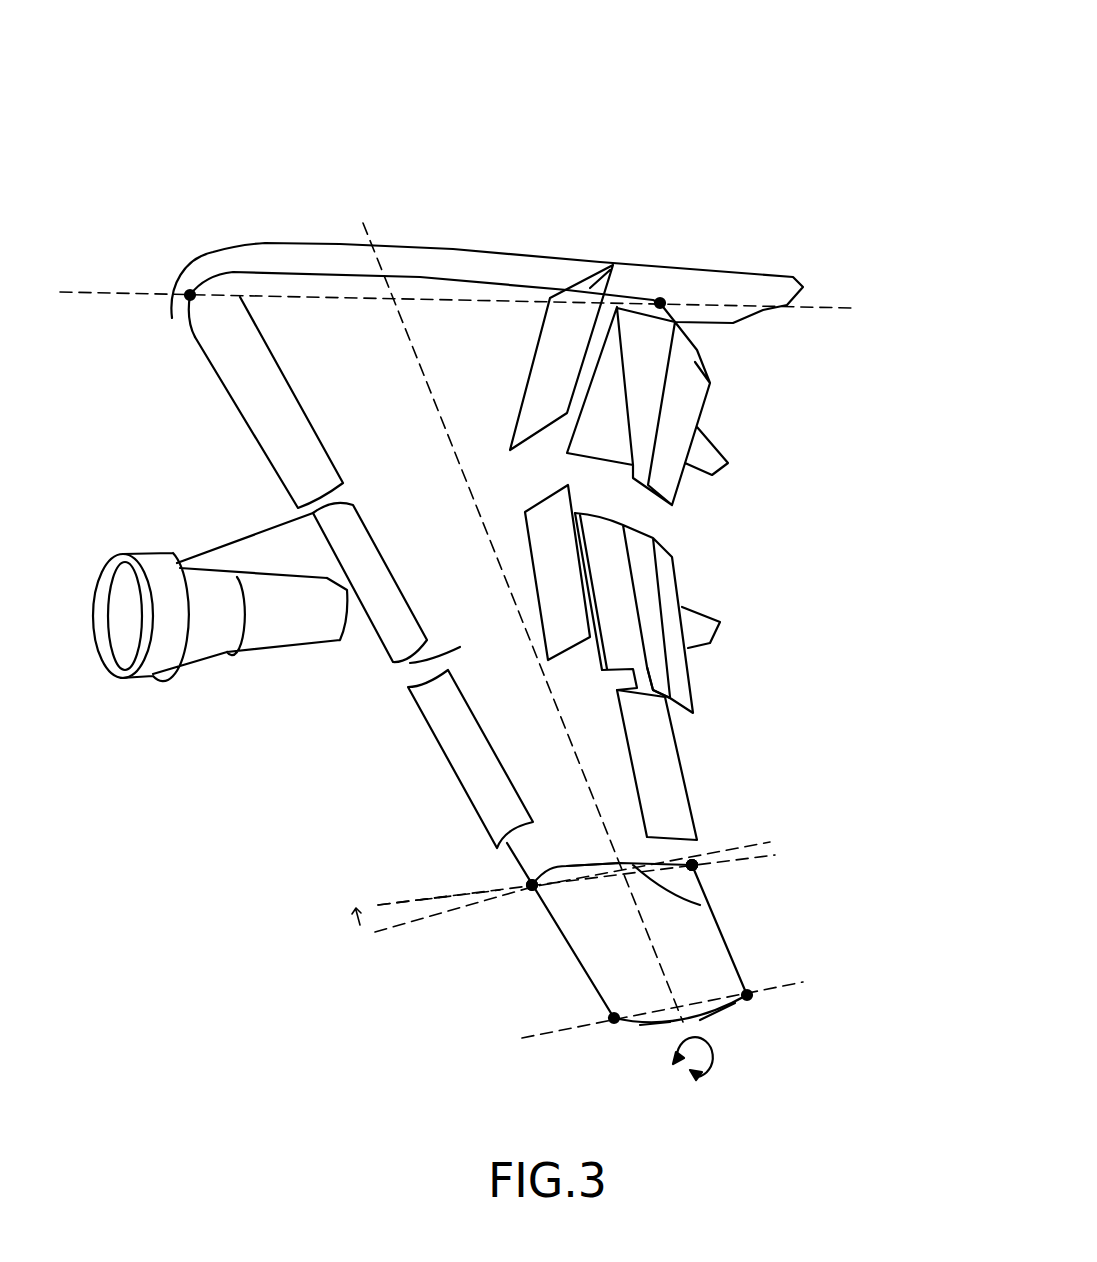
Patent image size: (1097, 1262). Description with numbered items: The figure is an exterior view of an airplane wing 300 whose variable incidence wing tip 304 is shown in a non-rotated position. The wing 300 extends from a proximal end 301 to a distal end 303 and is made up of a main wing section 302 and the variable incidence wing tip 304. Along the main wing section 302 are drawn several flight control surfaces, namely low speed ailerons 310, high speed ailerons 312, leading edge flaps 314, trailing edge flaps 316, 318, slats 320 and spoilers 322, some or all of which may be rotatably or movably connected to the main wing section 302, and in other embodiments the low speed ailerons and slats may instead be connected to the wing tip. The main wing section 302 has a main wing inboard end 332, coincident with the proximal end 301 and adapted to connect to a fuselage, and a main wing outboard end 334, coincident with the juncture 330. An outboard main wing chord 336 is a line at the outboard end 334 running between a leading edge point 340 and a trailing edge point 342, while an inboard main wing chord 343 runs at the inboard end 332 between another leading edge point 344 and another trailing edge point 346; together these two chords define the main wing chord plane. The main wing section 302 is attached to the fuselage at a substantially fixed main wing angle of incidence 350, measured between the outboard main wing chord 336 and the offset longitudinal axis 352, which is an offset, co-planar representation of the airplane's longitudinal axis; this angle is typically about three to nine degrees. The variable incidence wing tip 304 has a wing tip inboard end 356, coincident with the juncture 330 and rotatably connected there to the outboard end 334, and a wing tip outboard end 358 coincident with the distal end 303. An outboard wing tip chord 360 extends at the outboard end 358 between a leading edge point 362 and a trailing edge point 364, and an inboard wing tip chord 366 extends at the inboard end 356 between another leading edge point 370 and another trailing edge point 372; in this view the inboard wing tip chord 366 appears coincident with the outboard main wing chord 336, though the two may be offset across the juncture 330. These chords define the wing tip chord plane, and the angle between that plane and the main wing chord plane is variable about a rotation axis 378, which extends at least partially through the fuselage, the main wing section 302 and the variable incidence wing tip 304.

The airplane wing 300 is at (740, 100).
The proximal end 301 is at (233, 270).
The main wing section 302 is at (407, 667).
The distal end 303 is at (717, 1008).
The variable incidence wing tip 304 is at (583, 930).
The low speed ailerons 310 is at (658, 757).
The high speed ailerons 312 is at (617, 500).
The leading edge flaps 314 is at (273, 423).
The trailing edge flap 316 is at (628, 382).
The trailing edge flap 318 is at (608, 563).
The slats 320 is at (395, 620).
The spoilers 322 is at (622, 267).
The juncture 330 is at (553, 867).
The main wing inboard end 332 is at (307, 270).
The main wing outboard end 334 is at (657, 862).
The outboard main wing chord 336 is at (375, 903).
The leading edge point 340 is at (530, 886).
The trailing edge point 342 is at (697, 870).
The inboard main wing chord 343 is at (817, 311).
The leading edge point 344 is at (190, 297).
The trailing edge point 346 is at (660, 303).
The main wing angle of incidence 350 is at (360, 925).
The offset longitudinal axis 352 is at (392, 928).
The wing tip inboard end 356 is at (697, 872).
The wing tip outboard end 358 is at (653, 1027).
The outboard wing tip chord 360 is at (787, 987).
The leading edge point 362 is at (607, 1023).
The trailing edge point 364 is at (747, 995).
The inboard wing tip chord 366 is at (405, 903).
The leading edge point 370 is at (529, 890).
The trailing edge point 372 is at (695, 866).
The rotation axis 378 is at (690, 1032).